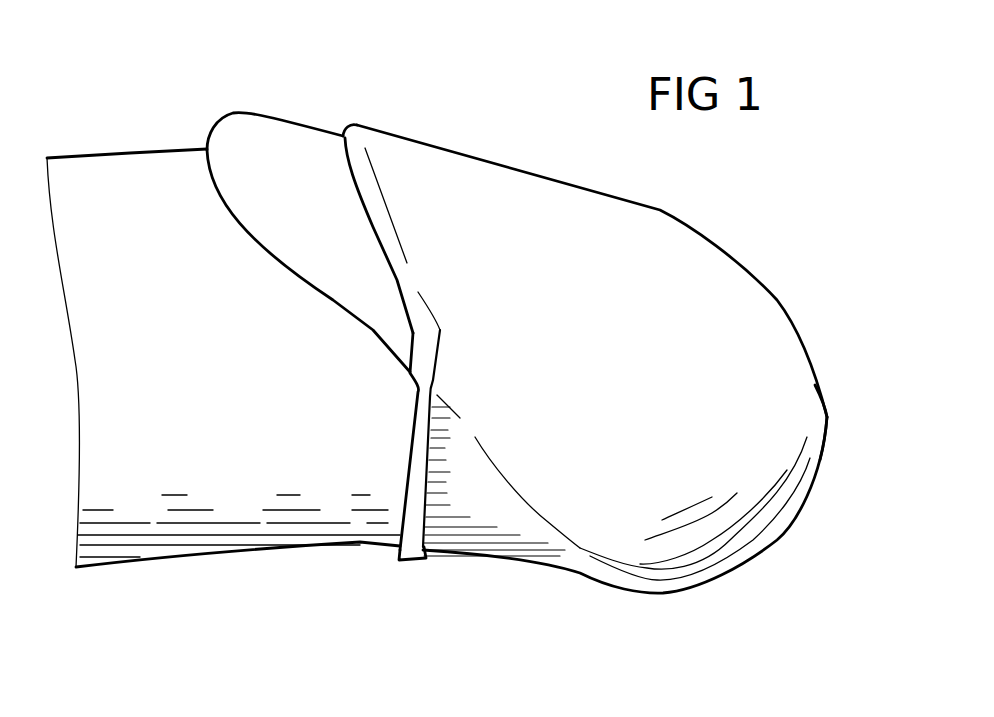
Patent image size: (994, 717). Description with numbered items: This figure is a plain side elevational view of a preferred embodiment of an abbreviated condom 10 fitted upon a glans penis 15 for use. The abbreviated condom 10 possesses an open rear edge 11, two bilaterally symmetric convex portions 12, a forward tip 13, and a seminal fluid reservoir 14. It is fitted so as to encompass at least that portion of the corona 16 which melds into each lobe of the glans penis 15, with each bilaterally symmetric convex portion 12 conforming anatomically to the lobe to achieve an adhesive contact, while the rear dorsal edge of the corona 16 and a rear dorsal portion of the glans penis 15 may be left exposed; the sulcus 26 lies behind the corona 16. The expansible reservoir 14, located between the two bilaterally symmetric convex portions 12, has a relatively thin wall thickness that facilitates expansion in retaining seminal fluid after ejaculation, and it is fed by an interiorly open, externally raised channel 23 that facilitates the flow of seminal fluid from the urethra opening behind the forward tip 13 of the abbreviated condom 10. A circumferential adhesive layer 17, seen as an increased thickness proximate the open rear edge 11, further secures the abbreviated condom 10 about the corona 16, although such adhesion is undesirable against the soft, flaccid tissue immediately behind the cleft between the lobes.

The abbreviated condom 10 is at (722, 242).
The open rear edge 11 is at (410, 427).
The bilaterally symmetric convex portion 12 is at (733, 493).
The forward tip 13 is at (823, 421).
The seminal fluid reservoir 14 is at (487, 493).
The glans penis 15 is at (320, 252).
The corona 16 is at (208, 127).
The circumferential adhesive layer 17 is at (413, 557).
The channel 23 is at (790, 505).
The sulcus 26 is at (205, 172).